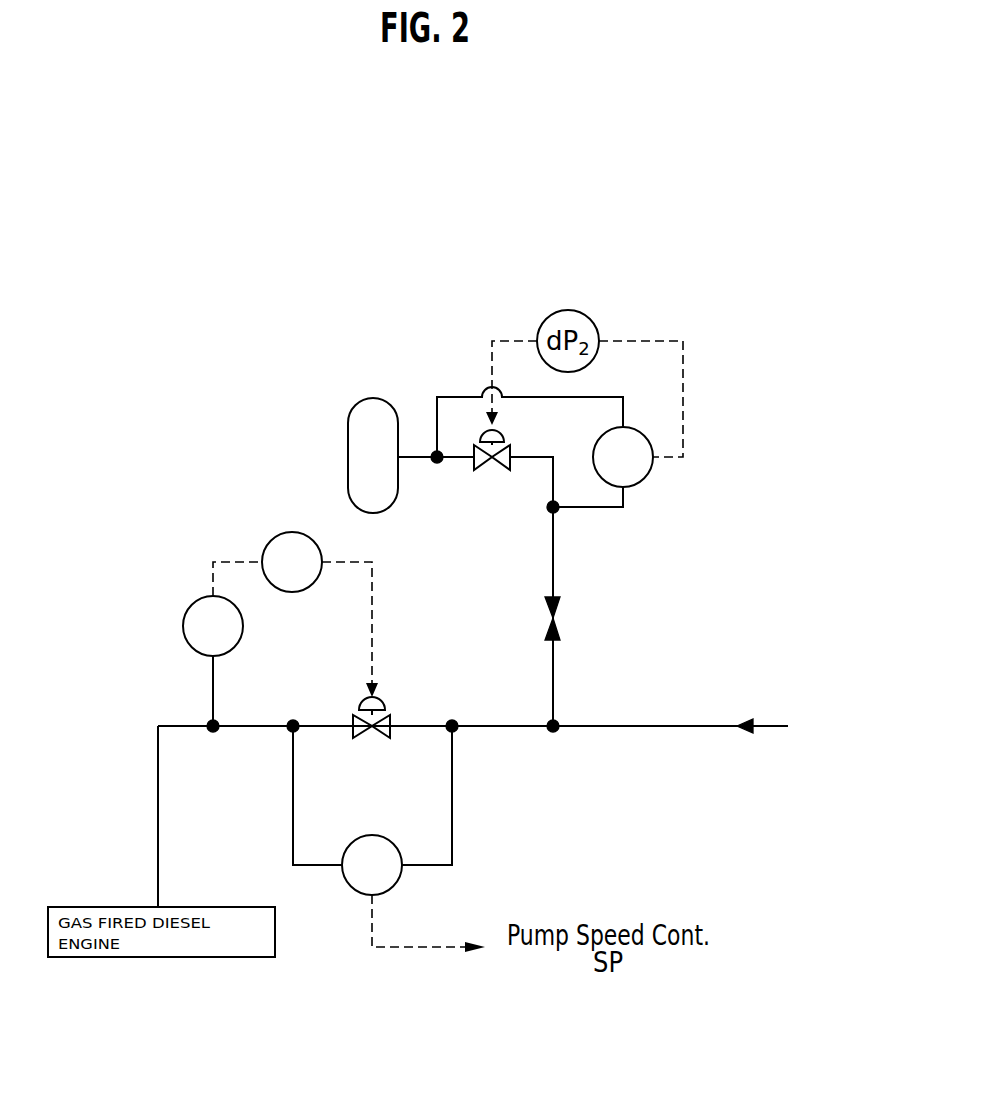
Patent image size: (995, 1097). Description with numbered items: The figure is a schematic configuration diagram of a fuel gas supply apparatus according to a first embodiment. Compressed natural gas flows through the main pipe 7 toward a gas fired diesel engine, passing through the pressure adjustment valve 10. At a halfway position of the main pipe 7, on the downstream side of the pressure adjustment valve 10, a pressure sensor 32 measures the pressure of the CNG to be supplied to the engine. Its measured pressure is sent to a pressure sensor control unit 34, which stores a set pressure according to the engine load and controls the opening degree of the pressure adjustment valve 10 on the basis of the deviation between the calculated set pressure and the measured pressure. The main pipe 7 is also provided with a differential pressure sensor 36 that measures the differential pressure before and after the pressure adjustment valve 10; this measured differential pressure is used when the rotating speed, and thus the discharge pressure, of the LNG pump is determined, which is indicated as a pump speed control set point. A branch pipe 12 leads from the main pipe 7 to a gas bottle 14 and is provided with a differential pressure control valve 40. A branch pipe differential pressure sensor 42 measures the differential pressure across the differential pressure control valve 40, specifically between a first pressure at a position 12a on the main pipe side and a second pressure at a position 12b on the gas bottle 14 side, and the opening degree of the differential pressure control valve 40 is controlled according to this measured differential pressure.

The main pipe 7 is at (680, 726).
The pressure adjustment valve 10 is at (385, 705).
The branch pipe 12 is at (553, 568).
The position on the main pipe side of the differential pressure control valve 12a is at (553, 507).
The position on the gas bottle side of the differential pressure control valve 12b is at (437, 463).
The gas bottle 14 is at (372, 398).
The pressure sensor 32 is at (183, 626).
The pressure sensor control unit 34 is at (292, 532).
The differential pressure sensor 36 is at (352, 888).
The differential pressure control valve 40 is at (504, 438).
The branch pipe differential pressure sensor 42 is at (642, 478).